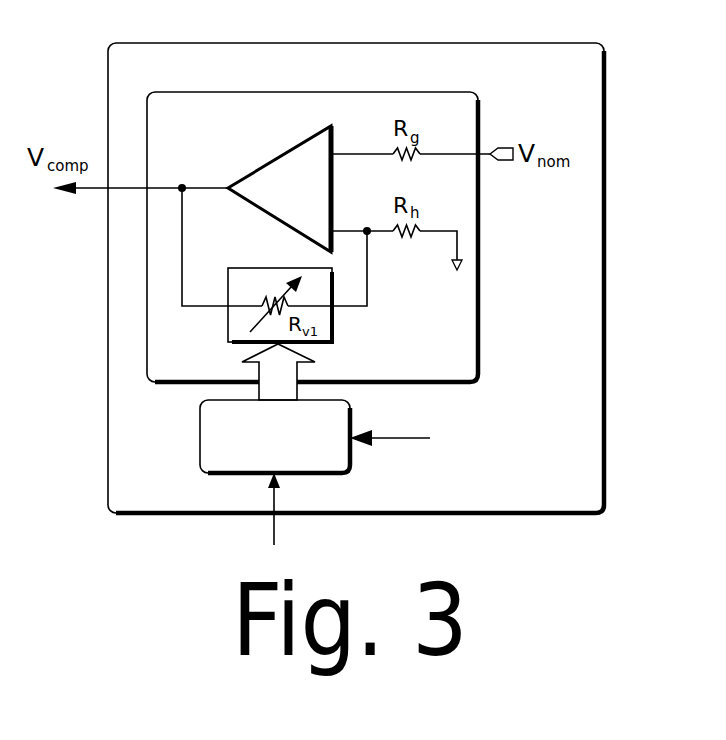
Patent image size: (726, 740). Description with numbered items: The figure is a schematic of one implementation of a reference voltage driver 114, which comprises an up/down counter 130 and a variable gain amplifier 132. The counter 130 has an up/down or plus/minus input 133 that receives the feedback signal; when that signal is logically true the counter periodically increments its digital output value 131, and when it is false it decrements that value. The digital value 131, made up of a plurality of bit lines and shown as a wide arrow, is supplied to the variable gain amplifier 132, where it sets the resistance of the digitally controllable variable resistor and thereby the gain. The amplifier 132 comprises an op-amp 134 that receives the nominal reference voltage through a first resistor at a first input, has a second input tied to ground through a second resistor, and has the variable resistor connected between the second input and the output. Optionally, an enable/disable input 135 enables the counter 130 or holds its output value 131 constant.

The reference voltage driver 114 is at (568, 53).
The variable gain amplifier 132 is at (460, 118).
The op-amp 134 is at (307, 155).
The digital value 131 is at (282, 376).
The up/down counter 130 is at (343, 460).
The up/down input 133 is at (275, 465).
The enable/disable input 135 is at (350, 447).